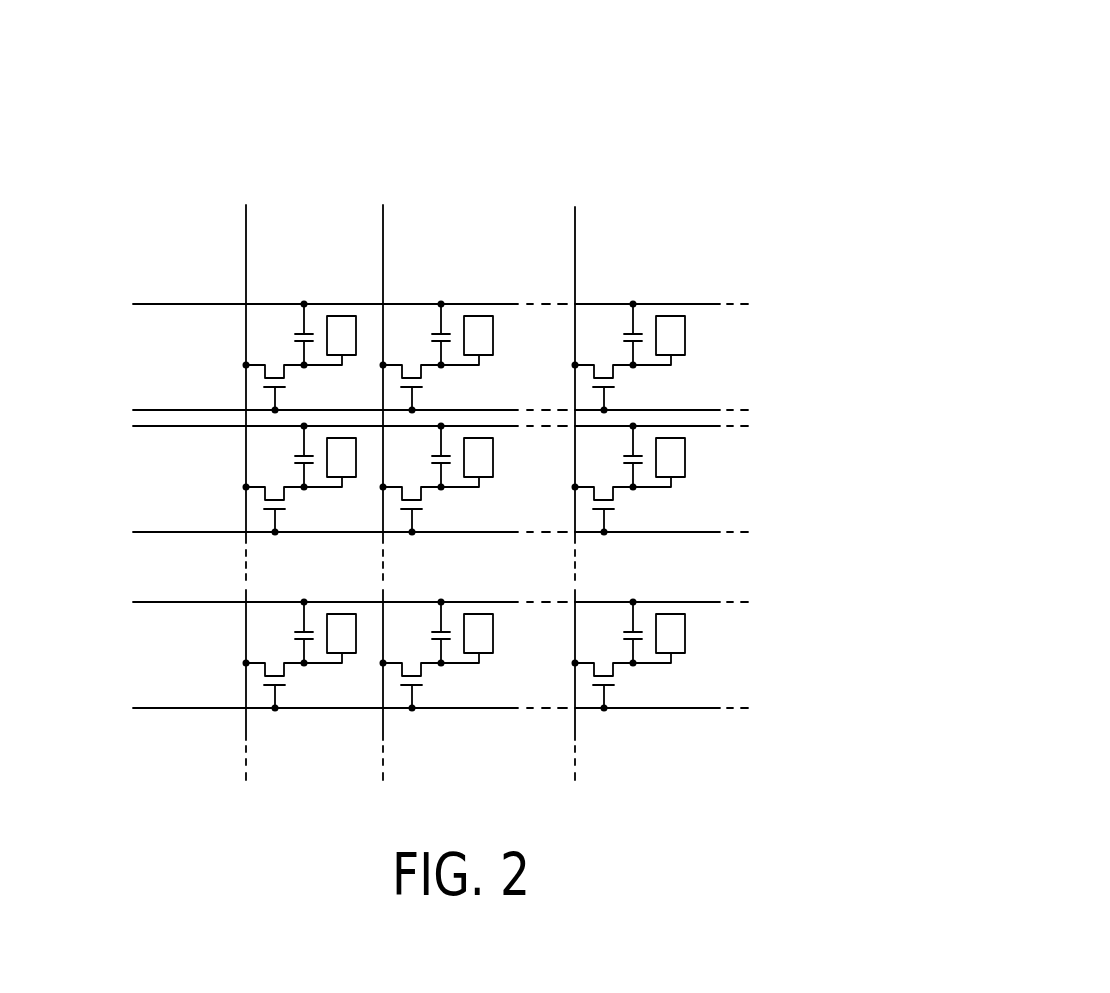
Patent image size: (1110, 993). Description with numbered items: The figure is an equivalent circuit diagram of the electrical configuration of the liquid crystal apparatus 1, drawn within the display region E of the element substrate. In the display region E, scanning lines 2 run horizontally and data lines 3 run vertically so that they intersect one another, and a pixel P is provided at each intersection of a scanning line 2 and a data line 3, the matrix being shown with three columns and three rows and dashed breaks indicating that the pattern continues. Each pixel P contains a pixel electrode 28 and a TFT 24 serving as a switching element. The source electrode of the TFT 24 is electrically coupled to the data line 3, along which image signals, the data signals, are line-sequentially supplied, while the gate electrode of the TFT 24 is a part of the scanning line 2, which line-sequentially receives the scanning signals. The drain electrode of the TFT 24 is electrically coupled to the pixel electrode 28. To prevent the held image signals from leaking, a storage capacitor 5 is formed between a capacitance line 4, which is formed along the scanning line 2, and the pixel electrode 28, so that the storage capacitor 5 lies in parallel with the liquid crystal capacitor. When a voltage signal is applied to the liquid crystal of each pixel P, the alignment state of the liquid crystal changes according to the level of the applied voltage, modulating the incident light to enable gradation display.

The display device / electro-optical device 1 is at (461, 395).
The display region E is at (461, 395).
The scanning line 2 is at (712, 408).
The data line 3 is at (248, 266).
The capacitance line 4 is at (712, 303).
The storage capacitor 5 is at (288, 337).
The TFT 24 is at (296, 384).
The pixel electrode 28 is at (343, 322).
The pixel P is at (289, 333).